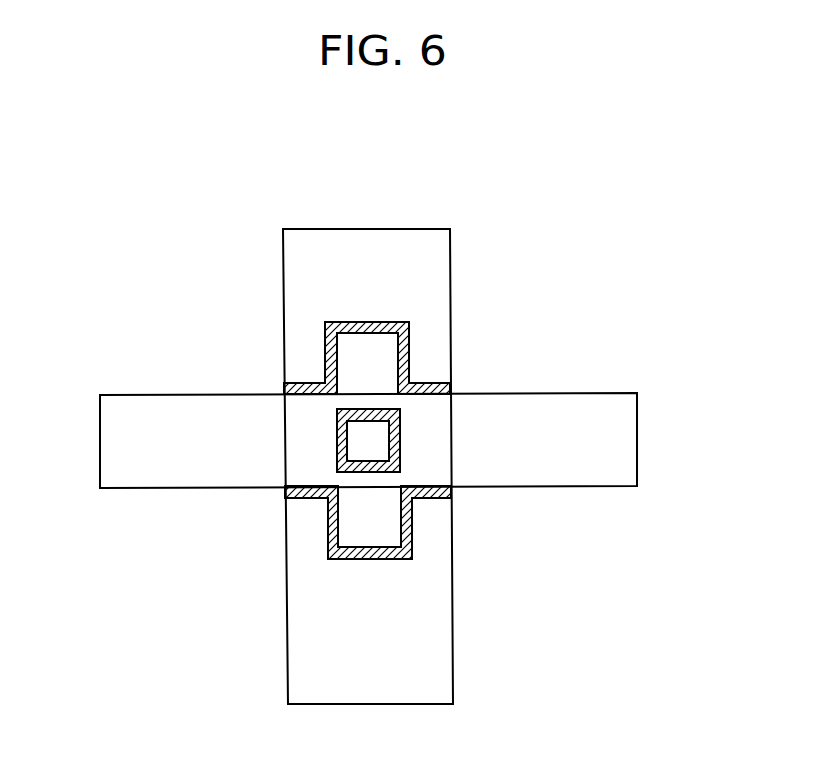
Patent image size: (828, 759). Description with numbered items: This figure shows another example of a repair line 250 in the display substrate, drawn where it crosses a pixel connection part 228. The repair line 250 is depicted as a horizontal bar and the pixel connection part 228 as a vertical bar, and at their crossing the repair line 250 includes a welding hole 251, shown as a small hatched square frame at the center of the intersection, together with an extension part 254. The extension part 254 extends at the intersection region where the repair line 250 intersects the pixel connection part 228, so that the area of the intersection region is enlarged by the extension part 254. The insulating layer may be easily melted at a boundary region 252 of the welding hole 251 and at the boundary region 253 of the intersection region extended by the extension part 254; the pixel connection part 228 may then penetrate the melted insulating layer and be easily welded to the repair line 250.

The pixel connection part 228 is at (443, 274).
The repair line 250 is at (627, 440).
The welding hole 251 is at (389, 448).
The boundary region of the welding hole 252 is at (340, 437).
The boundary region of the intersection region 253 is at (330, 530).
The extension part 254 is at (383, 517).